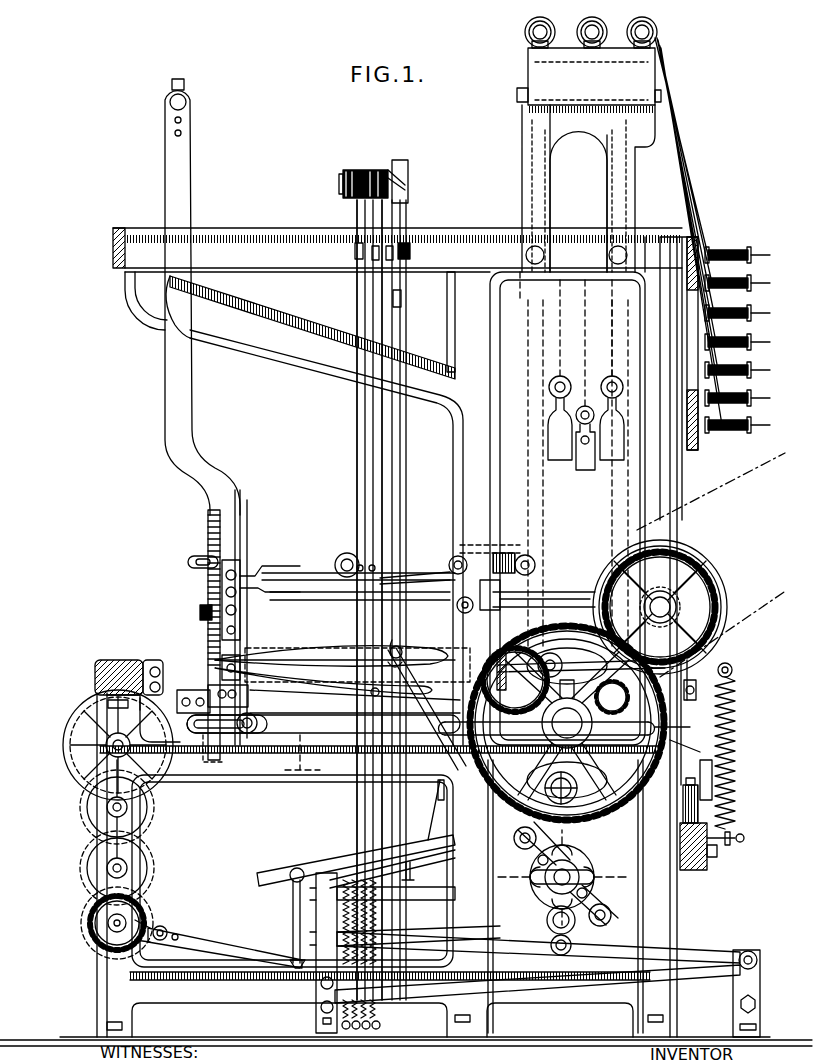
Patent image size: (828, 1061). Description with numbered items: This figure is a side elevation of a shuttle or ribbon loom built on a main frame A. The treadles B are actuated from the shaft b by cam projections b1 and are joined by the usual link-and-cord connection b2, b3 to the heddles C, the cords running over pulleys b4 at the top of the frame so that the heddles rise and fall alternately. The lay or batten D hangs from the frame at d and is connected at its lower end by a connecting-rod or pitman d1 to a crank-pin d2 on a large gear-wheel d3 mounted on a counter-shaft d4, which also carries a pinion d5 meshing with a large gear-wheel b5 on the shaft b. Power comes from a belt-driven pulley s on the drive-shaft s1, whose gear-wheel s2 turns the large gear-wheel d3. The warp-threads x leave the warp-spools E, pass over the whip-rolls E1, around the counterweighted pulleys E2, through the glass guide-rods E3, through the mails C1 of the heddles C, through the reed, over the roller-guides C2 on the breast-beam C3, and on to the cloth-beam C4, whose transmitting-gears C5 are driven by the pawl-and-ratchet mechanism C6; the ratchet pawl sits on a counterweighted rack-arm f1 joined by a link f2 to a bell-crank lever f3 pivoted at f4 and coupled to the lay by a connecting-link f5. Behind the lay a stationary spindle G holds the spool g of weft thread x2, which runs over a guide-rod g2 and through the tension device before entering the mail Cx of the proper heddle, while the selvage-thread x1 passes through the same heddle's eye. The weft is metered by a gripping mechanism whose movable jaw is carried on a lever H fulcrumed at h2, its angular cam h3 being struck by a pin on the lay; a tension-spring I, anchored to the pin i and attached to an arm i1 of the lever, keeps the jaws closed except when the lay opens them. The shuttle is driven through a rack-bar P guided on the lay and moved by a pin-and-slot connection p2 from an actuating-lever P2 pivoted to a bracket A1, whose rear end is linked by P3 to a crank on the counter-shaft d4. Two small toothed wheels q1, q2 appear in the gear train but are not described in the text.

The main frame A is at (453, 478).
The bracket A1 is at (455, 538).
The treadles B is at (428, 945).
The heddles C is at (350, 695).
The mails of the heddles C1 is at (355, 650).
The mail Cx is at (372, 700).
The roller-guides C2 is at (155, 668).
The breast-beam C3 is at (120, 665).
The cloth-beam C4 is at (70, 748).
The transmitting-gears C5 is at (80, 838).
The pawl-and-ratchet mechanism C6 is at (145, 922).
The lay or batten D is at (212, 480).
The hanging point of the lay d is at (190, 97).
The connecting-rod or pitman d1 is at (305, 730).
The crank-pin d2 is at (435, 790).
The large gear-wheel d3 is at (705, 745).
The counter-shaft d4 is at (552, 723).
The pinion d5 is at (700, 670).
The warp-spools E is at (755, 250).
The stationary pulleys or whip-rolls E1 is at (655, 40).
The counterweighted pulleys E2 is at (598, 373).
The glass guide-rods E3 is at (527, 573).
The counterweighted rack-arm f1 is at (175, 936).
The link f2 is at (356, 901).
The bell-crank lever f3 is at (412, 858).
The pivot of bell-crank lever f4 is at (342, 560).
The connecting-link f5 is at (357, 647).
The stationary spindle G is at (712, 770).
The spool g is at (735, 828).
The guide-rod g2 is at (438, 672).
The lever H is at (296, 590).
The fulcrum of lever h2 is at (480, 580).
The angular cam h3 is at (263, 578).
The tension-spring I is at (740, 796).
The anchoring-pin i is at (745, 838).
The arm i1 is at (735, 672).
The rack-bar P is at (205, 548).
The pin-and-slot connection p2 is at (185, 565).
The actuating-lever P2 is at (312, 540).
The link P3 is at (535, 582).
The ratchet wheel q1 is at (558, 672).
The pinion q2 is at (600, 710).
The belt-driven pulley s is at (695, 570).
The drive-shaft s1 is at (718, 588).
The gear-wheel s2 is at (690, 605).
The warp-threads x is at (720, 205).
The selvage-thread x1 is at (701, 231).
The filling or weft thread x2 is at (737, 700).
The shaft b is at (598, 877).
The cam projections b1 is at (610, 900).
The link connection b2 is at (382, 468).
The cord connection b3 is at (357, 415).
The pulleys b4 is at (348, 178).
The large gear-wheel b5 is at (615, 840).